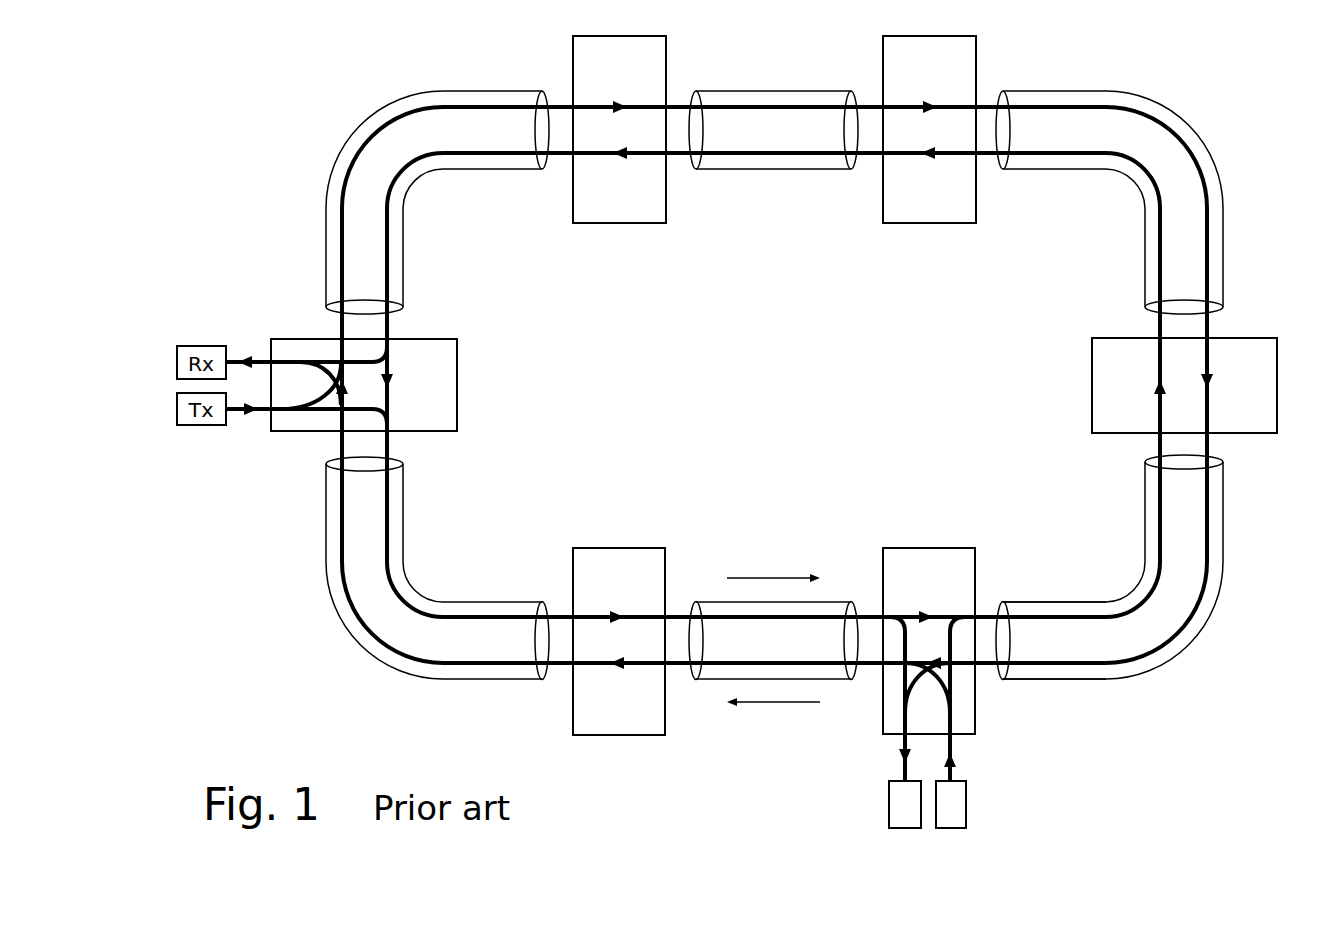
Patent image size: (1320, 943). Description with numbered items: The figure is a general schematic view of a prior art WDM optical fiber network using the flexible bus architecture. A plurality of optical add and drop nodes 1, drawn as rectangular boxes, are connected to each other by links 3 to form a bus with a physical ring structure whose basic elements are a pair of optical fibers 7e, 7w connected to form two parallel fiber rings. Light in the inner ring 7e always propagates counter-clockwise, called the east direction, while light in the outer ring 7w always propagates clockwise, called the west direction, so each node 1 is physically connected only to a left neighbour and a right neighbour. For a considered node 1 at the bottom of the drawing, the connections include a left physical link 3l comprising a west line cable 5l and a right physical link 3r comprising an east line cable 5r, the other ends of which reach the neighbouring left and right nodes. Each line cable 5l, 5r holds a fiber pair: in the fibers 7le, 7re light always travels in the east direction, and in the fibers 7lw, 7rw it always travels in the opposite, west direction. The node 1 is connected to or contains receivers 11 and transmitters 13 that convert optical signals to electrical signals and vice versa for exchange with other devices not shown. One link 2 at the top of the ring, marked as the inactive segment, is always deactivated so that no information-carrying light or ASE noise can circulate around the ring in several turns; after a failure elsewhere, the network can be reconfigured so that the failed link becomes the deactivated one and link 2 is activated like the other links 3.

The optical add and drop node 1 is at (630, 548).
The deactivated link 2 is at (786, 200).
The link 3 is at (436, 202).
The left physical link 3l is at (785, 538).
The right physical link 3r is at (1102, 551).
The west line cable 5l is at (708, 605).
The east line cable 5r is at (1060, 605).
The west fiber ring 7w is at (340, 323).
The east fiber ring 7e is at (388, 322).
The left link east fiber 7le is at (863, 613).
The left link west fiber 7lw is at (868, 667).
The right link east fiber 7re is at (988, 613).
The right link west fiber 7rw is at (995, 667).
The receiver 11 is at (889, 790).
The transmitter 13 is at (966, 793).